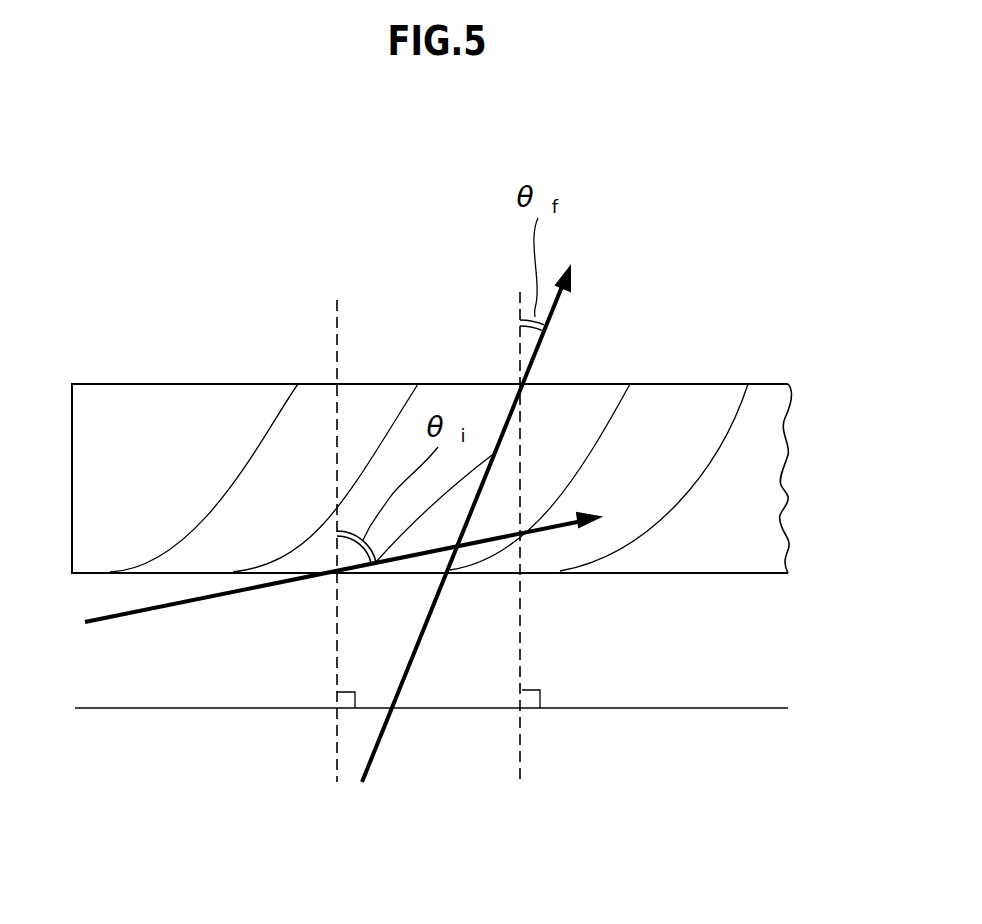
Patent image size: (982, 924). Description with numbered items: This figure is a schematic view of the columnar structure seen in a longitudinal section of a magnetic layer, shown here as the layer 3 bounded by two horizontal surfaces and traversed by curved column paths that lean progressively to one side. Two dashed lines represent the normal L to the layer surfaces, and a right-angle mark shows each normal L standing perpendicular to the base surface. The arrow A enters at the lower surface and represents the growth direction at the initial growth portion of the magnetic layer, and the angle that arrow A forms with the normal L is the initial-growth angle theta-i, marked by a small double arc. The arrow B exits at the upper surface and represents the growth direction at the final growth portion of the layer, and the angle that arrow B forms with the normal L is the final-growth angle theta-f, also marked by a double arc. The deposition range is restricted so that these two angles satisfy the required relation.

The optical medium (lens / transparent body) 3 is at (748, 498).
The arrow A is at (122, 617).
The arrow B is at (410, 663).
The normal L is at (337, 755).